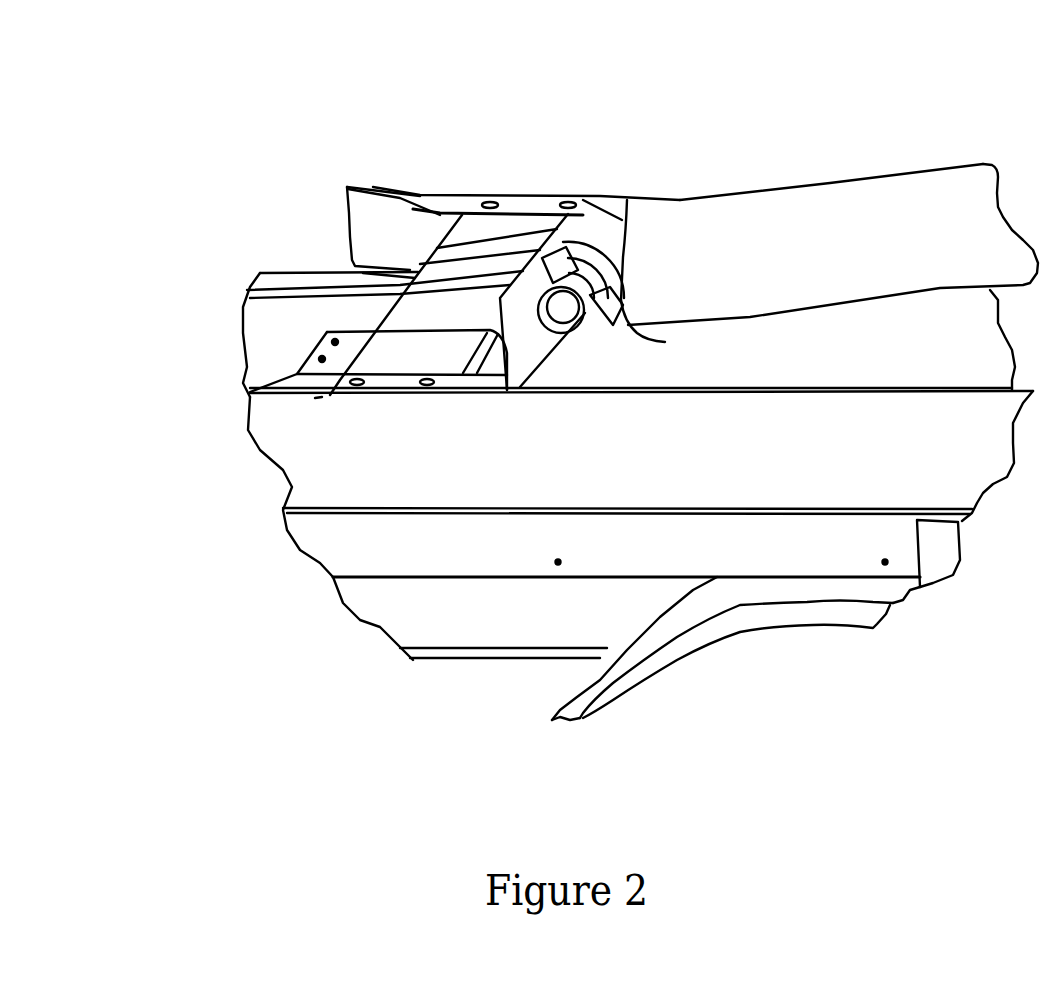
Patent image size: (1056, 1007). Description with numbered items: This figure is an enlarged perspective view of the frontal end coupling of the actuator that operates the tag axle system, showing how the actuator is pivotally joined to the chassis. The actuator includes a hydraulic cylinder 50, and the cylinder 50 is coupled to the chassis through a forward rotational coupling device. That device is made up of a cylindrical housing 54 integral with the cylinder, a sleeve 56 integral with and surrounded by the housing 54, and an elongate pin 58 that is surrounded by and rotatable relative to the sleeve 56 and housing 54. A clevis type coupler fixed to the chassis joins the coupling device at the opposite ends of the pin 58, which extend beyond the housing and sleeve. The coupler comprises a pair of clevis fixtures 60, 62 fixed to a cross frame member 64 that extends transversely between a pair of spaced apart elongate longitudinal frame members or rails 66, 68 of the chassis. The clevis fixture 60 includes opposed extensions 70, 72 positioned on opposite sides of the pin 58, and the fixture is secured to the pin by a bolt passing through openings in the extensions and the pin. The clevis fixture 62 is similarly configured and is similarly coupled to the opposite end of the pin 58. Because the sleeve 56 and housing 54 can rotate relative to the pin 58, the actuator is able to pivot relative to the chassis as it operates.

The hydraulic cylinder 50 is at (895, 190).
The cylindrical housing 54 is at (603, 223).
The sleeve 56 is at (610, 283).
The elongate pin 58 is at (577, 312).
The clevis fixture 60 is at (450, 317).
The clevis fixture 62 is at (495, 240).
The cross frame member 64 is at (383, 355).
The longitudinal frame member 66 is at (357, 547).
The longitudinal frame member 68 is at (363, 222).
The extension 70 is at (554, 262).
The extension 72 is at (665, 342).